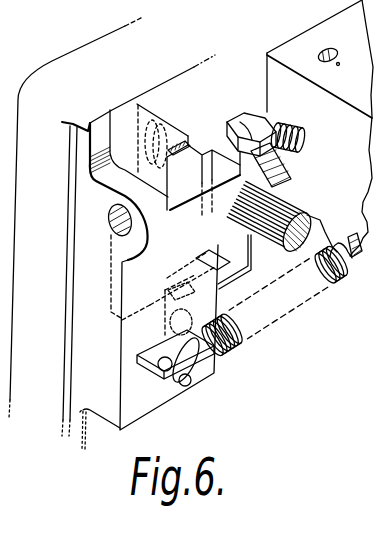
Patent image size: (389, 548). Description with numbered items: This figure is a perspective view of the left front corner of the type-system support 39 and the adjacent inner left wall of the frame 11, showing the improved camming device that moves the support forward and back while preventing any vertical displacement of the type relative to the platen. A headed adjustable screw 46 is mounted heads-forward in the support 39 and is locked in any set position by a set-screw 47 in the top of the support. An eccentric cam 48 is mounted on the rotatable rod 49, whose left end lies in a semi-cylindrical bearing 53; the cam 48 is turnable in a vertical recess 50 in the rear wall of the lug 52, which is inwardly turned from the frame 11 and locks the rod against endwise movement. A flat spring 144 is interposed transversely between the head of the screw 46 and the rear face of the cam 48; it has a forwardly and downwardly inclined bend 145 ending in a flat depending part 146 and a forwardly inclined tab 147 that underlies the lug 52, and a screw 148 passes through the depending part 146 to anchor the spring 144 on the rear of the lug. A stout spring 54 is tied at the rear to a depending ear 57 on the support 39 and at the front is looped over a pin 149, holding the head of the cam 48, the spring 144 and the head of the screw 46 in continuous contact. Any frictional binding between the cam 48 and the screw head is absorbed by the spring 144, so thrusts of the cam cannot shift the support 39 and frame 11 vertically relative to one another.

The frame 11 is at (112, 226).
The support 39 is at (320, 128).
The adjustable screw 46 is at (292, 165).
The set-screw 47 is at (321, 48).
The eccentric cam 48 is at (208, 138).
The rod 49 is at (298, 210).
The vertical recess 50 is at (176, 138).
The lug 52 is at (158, 403).
The semicircular bearing 53 is at (160, 98).
The spring 54 is at (267, 330).
The ear 57 is at (348, 231).
The flat spring 144 is at (240, 150).
The inclined bend 145 is at (236, 274).
The depending part 146 is at (167, 300).
The inclined tab 147 is at (133, 366).
The screw 148 is at (164, 332).
The pin 149 is at (193, 378).